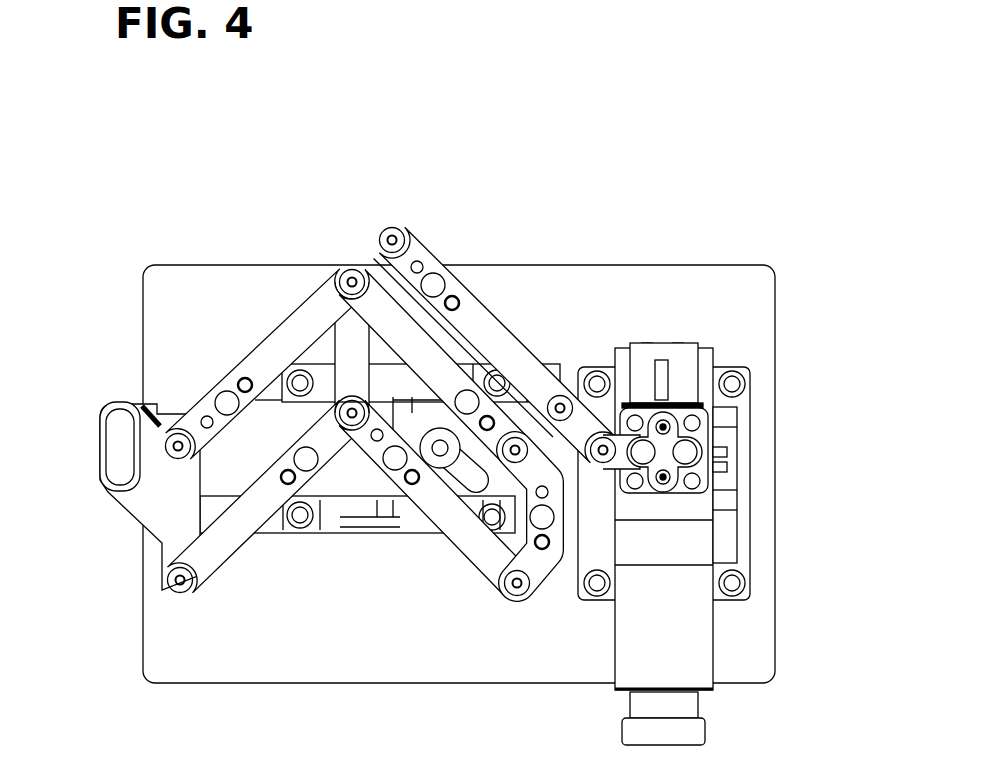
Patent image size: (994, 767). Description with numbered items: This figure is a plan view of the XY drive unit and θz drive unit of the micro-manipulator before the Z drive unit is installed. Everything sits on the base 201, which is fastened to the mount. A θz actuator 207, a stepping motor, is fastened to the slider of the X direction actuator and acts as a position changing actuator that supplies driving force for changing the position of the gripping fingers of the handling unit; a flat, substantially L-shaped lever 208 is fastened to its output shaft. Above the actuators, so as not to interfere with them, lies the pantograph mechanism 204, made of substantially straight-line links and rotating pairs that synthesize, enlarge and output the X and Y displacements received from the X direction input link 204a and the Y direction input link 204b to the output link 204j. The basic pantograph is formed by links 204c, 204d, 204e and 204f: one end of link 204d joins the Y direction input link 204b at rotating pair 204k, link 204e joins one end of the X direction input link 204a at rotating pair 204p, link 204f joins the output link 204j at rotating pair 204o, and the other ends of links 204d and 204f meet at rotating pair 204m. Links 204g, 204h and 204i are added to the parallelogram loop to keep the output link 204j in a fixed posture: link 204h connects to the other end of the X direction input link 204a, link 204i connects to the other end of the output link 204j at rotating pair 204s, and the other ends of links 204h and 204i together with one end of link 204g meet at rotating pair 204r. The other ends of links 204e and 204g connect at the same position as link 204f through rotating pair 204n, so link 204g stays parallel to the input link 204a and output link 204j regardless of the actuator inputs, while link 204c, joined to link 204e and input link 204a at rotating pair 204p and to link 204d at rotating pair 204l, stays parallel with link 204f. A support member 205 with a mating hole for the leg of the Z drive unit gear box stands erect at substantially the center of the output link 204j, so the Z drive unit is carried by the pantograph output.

The base 201 is at (777, 591).
The pantograph mechanism 204 is at (422, 125).
The X direction input link 204a is at (546, 580).
The Y direction input link 204b is at (672, 437).
The link 204c is at (530, 408).
The link 204d is at (455, 300).
The link 204e is at (410, 260).
The link 204f is at (242, 363).
The link 204g is at (325, 345).
The link 204h is at (473, 567).
The link 204i is at (212, 575).
The output link 204j is at (163, 557).
The rotating pair 204k is at (625, 388).
The rotating pair 204l is at (565, 398).
The rotating pair 204m is at (393, 222).
The rotating pair 204n is at (350, 270).
The rotating pair 204o is at (172, 430).
The rotating pair 204p is at (478, 337).
The rotating pair 204r is at (347, 433).
The rotating pair 204s is at (167, 590).
The support member 205 is at (120, 495).
The θz actuator 207 is at (413, 395).
The lever 208 is at (473, 472).